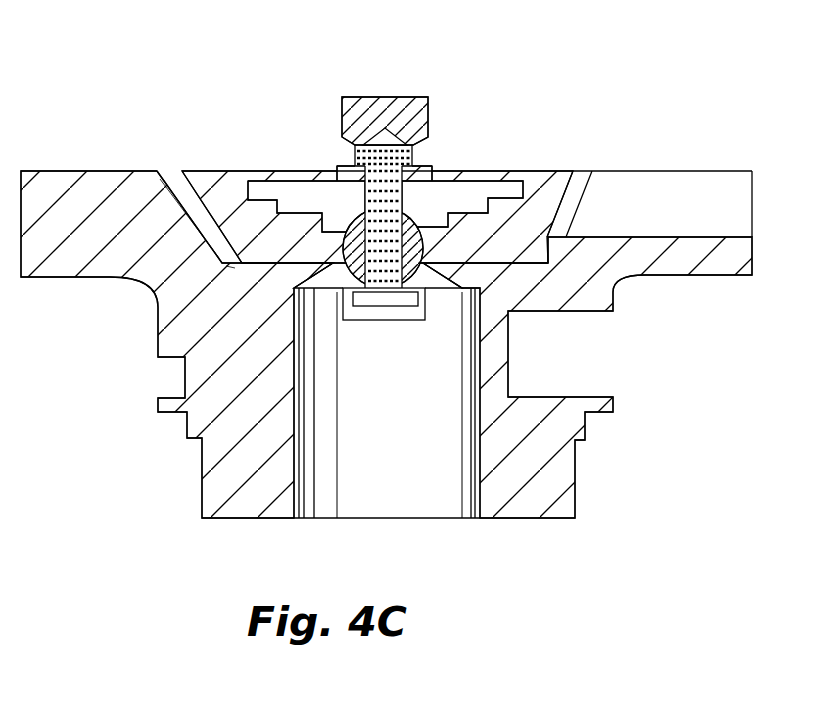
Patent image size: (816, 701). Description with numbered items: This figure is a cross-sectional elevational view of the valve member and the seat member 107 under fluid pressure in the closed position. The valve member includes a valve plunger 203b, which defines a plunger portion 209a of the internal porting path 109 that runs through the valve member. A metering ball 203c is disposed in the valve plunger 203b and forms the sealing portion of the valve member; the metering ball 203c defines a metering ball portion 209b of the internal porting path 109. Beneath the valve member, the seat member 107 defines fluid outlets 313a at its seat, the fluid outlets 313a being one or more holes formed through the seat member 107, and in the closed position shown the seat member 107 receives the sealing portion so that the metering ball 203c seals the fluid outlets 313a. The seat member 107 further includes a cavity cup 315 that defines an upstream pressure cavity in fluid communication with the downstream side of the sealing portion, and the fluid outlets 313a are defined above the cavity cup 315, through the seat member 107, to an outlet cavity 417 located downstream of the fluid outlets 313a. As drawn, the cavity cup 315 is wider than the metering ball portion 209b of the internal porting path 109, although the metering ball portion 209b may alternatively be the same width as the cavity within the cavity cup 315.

The seat member 107 is at (168, 330).
The internal porting path 109 is at (340, 165).
The valve plunger 203b is at (360, 96).
The metering ball 203c is at (347, 246).
The plunger portion 209a is at (418, 150).
The metering ball portion 209b is at (380, 306).
The fluid outlets 313a is at (327, 272).
The cavity cup 315 is at (400, 320).
The outlet cavity 417 is at (410, 457).